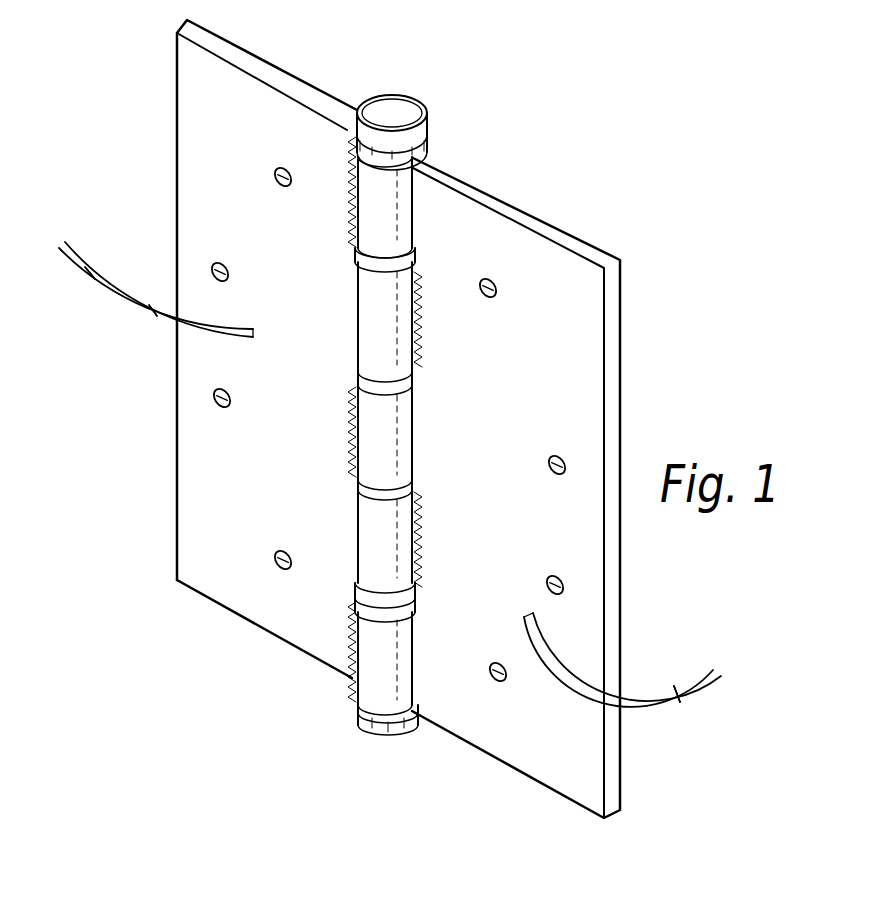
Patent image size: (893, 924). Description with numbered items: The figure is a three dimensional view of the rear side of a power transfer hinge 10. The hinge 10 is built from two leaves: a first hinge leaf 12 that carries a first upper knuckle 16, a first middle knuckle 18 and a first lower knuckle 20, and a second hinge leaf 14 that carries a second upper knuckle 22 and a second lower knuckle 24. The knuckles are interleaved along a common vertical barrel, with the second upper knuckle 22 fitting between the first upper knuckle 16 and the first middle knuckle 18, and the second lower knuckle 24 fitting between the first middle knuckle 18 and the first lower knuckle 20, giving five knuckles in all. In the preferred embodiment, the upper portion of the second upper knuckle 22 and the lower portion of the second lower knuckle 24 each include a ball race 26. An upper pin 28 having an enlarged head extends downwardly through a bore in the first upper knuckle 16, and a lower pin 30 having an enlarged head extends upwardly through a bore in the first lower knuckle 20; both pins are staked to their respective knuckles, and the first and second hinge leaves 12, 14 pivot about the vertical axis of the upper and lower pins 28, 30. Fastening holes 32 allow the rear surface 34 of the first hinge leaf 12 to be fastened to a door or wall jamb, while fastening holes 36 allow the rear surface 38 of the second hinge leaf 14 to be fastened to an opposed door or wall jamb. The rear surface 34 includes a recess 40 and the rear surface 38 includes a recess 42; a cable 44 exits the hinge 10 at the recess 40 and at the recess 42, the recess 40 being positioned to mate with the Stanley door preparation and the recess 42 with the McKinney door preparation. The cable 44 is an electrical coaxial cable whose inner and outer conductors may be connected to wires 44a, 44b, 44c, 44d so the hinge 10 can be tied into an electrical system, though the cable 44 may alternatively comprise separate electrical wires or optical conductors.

The power transfer hinge 10 is at (147, 429).
The first hinge leaf 12 is at (323, 60).
The second hinge leaf 14 is at (556, 223).
The first upper knuckle 16 is at (392, 218).
The first middle knuckle 18 is at (398, 437).
The first lower knuckle 20 is at (400, 672).
The second upper knuckle 22 is at (393, 348).
The second lower knuckle 24 is at (400, 554).
The ball race 26 is at (409, 262).
The upper pin 28 is at (407, 112).
The lower pin 30 is at (385, 734).
The fastening holes 32 is at (277, 185).
The rear surface 34 is at (310, 431).
The fastening holes 36 is at (489, 300).
The rear surface 38 is at (512, 504).
The recess 40 is at (253, 333).
The recess 42 is at (530, 617).
The cable 44 is at (153, 313).
The wire 44a is at (86, 272).
The wire 44b is at (78, 250).
The wire 44c is at (707, 676).
The wire 44d is at (706, 675).